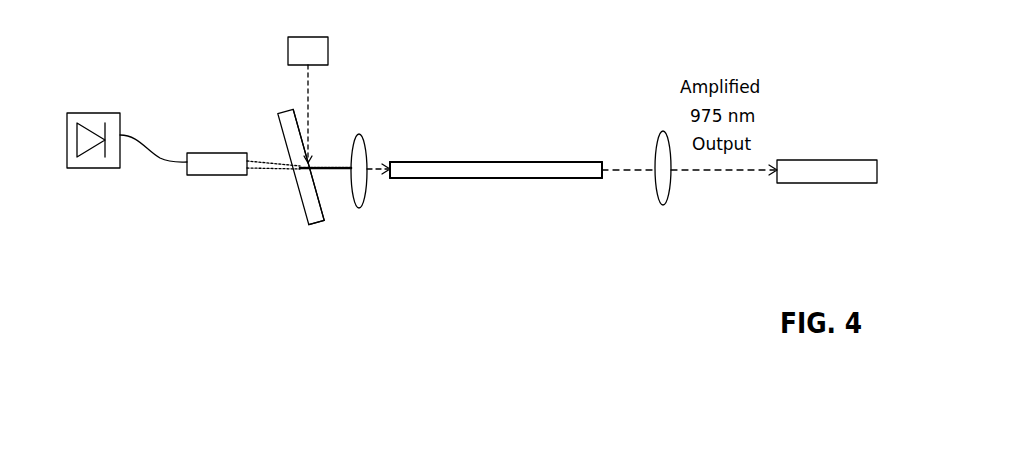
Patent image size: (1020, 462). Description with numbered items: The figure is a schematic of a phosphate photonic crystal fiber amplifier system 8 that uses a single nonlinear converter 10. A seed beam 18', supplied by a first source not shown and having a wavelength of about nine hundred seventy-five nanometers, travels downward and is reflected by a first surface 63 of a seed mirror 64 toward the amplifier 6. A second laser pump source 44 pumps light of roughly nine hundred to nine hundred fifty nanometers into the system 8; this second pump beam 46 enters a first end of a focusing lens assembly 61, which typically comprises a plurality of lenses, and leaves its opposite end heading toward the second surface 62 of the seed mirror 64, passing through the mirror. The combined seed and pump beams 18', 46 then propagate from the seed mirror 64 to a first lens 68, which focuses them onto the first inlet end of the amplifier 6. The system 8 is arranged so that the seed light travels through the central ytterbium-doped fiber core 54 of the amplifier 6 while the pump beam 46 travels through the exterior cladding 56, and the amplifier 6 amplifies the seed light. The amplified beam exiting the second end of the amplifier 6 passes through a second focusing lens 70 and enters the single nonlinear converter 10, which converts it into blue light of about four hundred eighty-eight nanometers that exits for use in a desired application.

The system 8 is at (820, 102).
The single nonlinear converter 10 is at (810, 185).
The seed source 18' is at (346, 97).
The pump source 44 is at (88, 172).
The second pump beam 46 is at (255, 178).
The Yb doped fiber core 54 is at (540, 162).
The exterior cladding 56 is at (530, 178).
The phosphate photonic crystal fiber amplifier 6 is at (470, 178).
The focusing lens assembly 61 is at (200, 153).
The second surface 62 is at (303, 219).
The first surface 63 is at (320, 193).
The seed mirror 64 is at (316, 226).
The first lens 68 is at (366, 143).
The second focusing lens 70 is at (665, 205).